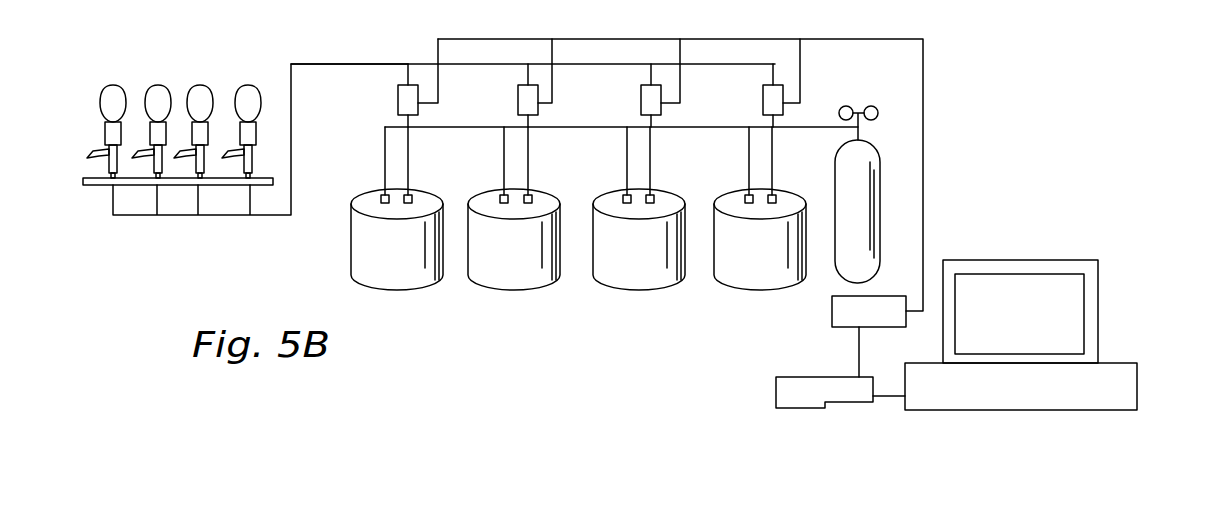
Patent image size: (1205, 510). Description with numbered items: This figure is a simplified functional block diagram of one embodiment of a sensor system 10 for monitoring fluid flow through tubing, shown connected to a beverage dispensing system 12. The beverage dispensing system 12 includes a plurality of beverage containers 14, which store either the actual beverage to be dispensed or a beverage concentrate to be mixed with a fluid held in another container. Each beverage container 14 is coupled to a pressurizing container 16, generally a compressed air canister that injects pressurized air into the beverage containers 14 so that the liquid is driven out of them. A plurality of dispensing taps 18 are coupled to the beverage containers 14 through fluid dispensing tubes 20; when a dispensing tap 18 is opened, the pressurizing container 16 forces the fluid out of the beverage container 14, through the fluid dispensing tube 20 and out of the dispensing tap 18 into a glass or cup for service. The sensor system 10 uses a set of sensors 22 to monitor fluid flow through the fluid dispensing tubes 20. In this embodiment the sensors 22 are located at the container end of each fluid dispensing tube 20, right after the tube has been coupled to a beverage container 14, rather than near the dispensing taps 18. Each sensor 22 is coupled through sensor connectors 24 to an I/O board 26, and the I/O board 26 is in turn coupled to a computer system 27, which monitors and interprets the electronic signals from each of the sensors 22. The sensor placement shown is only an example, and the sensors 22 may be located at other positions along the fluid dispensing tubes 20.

The sensor system 10 is at (977, 70).
The beverage dispensing system 12 is at (245, 169).
The beverage container 14 is at (381, 286).
The pressurizing container 16 is at (880, 161).
The dispensing tap 18 is at (119, 82).
The fluid dispensing tube 20 is at (881, 38).
The sensor 22 is at (397, 98).
The sensor connector 24 is at (831, 318).
The I/O board 26 is at (800, 377).
The computer system 27 is at (991, 256).